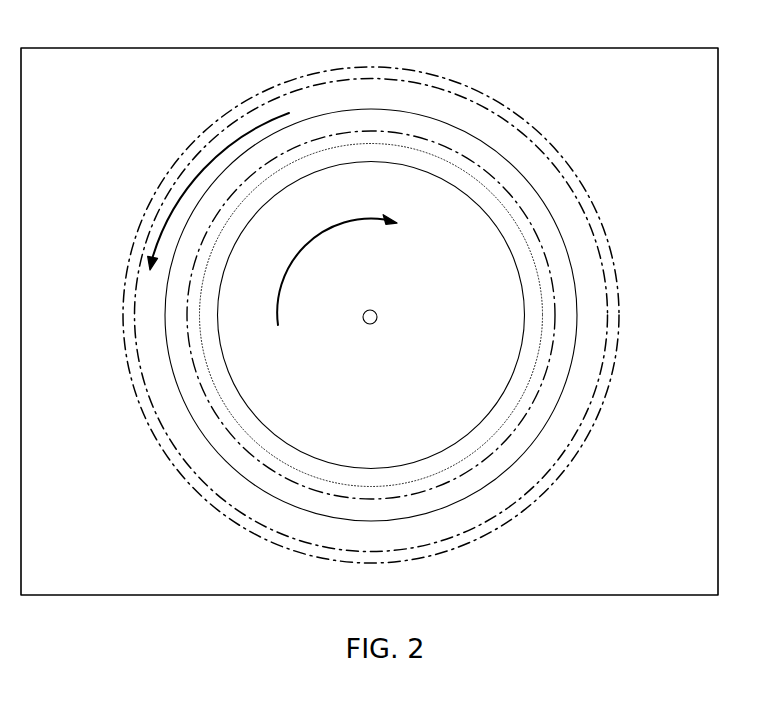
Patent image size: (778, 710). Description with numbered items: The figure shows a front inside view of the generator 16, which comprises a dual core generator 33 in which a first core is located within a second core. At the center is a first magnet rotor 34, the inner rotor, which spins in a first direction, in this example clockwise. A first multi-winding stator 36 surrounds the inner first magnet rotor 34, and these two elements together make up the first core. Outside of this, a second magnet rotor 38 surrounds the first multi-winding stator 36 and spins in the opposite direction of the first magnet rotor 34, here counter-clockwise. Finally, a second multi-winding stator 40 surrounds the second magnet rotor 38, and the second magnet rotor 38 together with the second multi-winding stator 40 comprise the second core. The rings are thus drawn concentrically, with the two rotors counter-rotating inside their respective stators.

The generator 16 is at (462, 47).
The dual core generator 33 is at (141, 148).
The first magnet rotor 34 is at (425, 415).
The first multi-winding stator 36 is at (205, 373).
The second magnet rotor 38 is at (572, 267).
The second multi-winding stator 40 is at (505, 118).